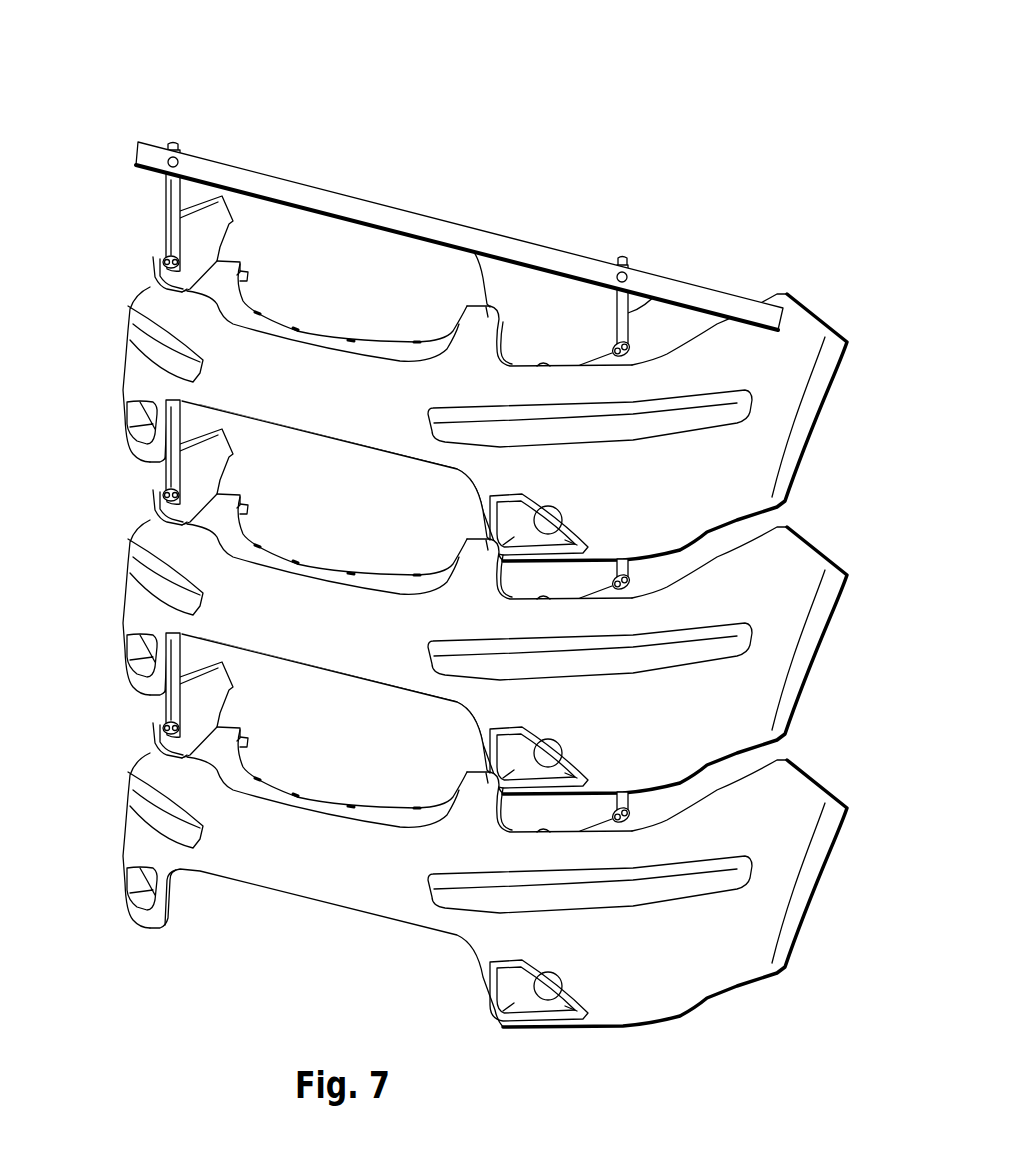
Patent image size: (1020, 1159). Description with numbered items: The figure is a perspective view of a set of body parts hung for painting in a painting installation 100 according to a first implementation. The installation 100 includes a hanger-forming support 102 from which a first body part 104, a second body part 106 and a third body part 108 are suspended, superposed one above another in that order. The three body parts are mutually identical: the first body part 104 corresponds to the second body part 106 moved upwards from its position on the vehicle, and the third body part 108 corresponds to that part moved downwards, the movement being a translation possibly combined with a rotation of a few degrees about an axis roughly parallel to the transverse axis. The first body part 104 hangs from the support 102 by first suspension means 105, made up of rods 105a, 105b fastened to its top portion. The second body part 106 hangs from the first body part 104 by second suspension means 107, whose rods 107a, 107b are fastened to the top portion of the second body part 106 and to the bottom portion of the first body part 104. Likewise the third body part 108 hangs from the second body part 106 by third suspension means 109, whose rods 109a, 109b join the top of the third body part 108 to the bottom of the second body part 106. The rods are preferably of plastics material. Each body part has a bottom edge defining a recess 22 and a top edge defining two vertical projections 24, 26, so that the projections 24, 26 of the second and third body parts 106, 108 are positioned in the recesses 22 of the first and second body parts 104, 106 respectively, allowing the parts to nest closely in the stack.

The painting installation 100 is at (470, 515).
The hanger-forming support 102 is at (397, 212).
The first body part 104 is at (832, 430).
The first suspension means 105 is at (395, 251).
The rod 105a is at (627, 315).
The rod 105b is at (173, 207).
The second body part 106 is at (830, 672).
The second suspension means 107 is at (375, 496).
The rod 107a is at (640, 572).
The rod 107b is at (167, 470).
The third body part 108 is at (830, 897).
The third suspension means 109 is at (374, 729).
The rod 109a is at (640, 805).
The rod 109b is at (167, 703).
The recess 22 is at (333, 470).
The projection 24 is at (483, 316).
The projection 26 is at (226, 262).